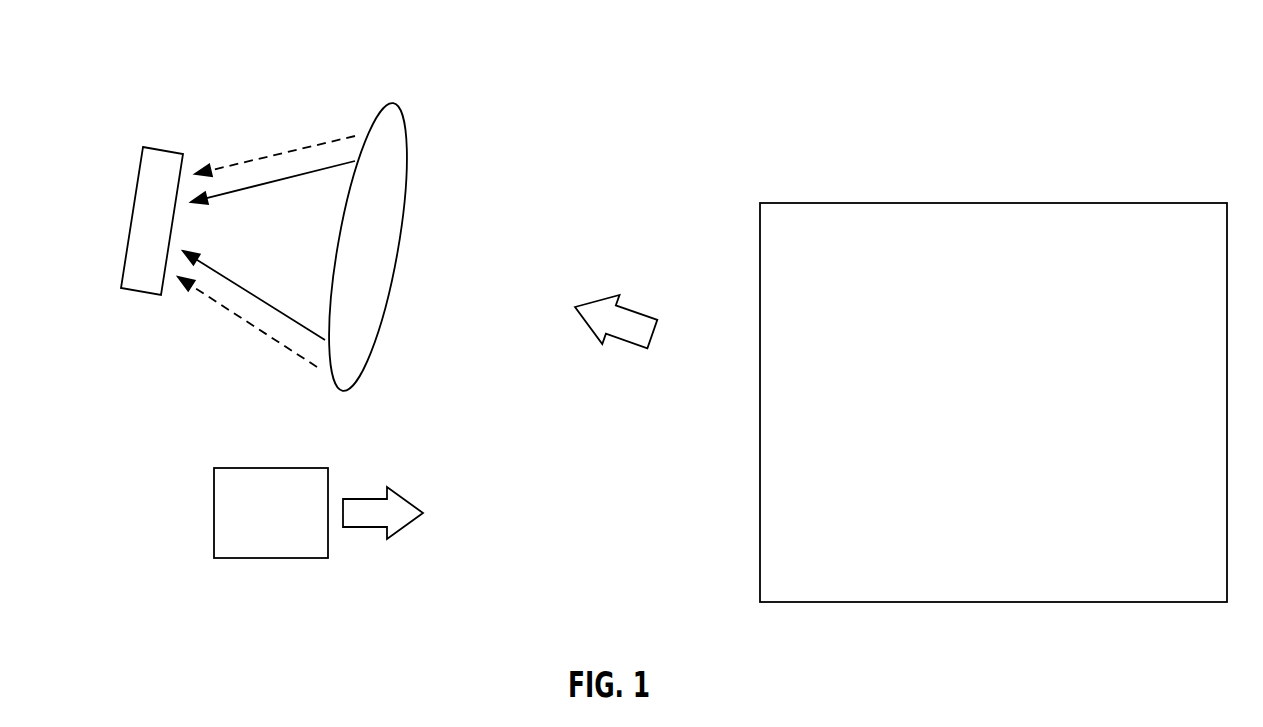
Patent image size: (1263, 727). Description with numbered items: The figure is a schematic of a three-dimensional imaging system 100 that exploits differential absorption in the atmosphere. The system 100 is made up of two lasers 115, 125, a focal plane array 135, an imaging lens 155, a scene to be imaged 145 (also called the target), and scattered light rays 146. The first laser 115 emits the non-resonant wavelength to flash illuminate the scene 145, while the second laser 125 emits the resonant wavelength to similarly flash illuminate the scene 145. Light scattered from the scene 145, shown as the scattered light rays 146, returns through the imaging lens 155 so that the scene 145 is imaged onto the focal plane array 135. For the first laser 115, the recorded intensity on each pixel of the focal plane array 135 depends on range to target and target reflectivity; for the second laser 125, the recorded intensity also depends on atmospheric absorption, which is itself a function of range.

The 3-D imaging system 100 is at (1178, 50).
The first laser 115 is at (240, 468).
The second laser 125 is at (214, 528).
The focal plane array 135 is at (132, 218).
The scene to be imaged 145 is at (1155, 202).
The scattered light rays 146 is at (627, 341).
The imaging lens 155 is at (393, 103).